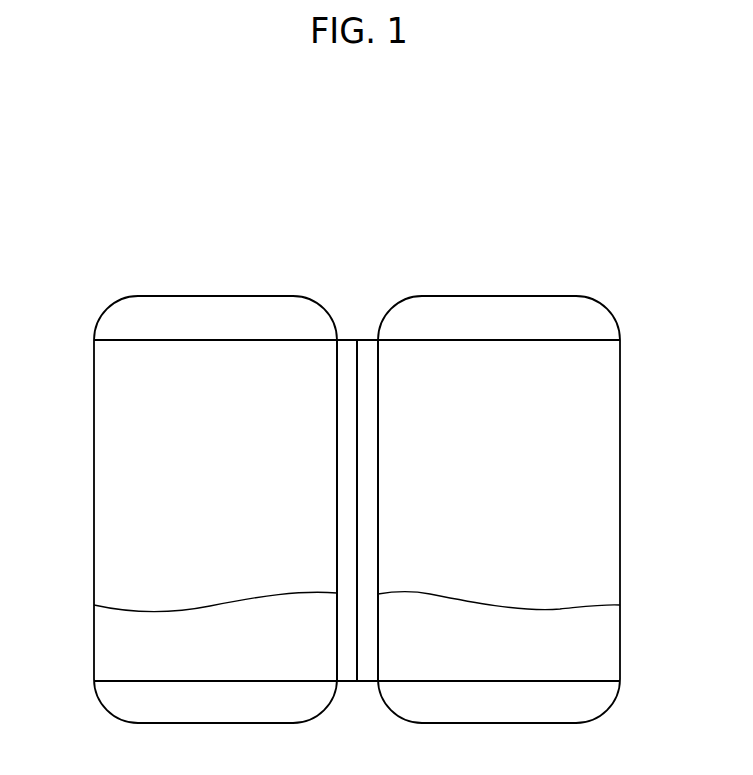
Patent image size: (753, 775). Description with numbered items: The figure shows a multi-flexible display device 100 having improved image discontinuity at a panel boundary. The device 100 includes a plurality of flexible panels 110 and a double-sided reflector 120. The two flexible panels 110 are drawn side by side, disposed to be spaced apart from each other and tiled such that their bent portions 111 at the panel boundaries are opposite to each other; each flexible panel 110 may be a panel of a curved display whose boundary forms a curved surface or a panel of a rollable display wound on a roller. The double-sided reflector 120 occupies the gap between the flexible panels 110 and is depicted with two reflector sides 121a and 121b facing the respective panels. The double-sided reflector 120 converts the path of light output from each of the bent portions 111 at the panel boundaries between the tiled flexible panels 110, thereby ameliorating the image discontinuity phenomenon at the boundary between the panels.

The multi-flexible display device 100 is at (472, 214).
The flexible panel 110 is at (94, 507).
The bent portion 111 is at (94, 605).
The double-sided reflector 120 is at (397, 243).
The first hinge member 121a is at (346, 340).
The second hinge member 121b is at (369, 340).